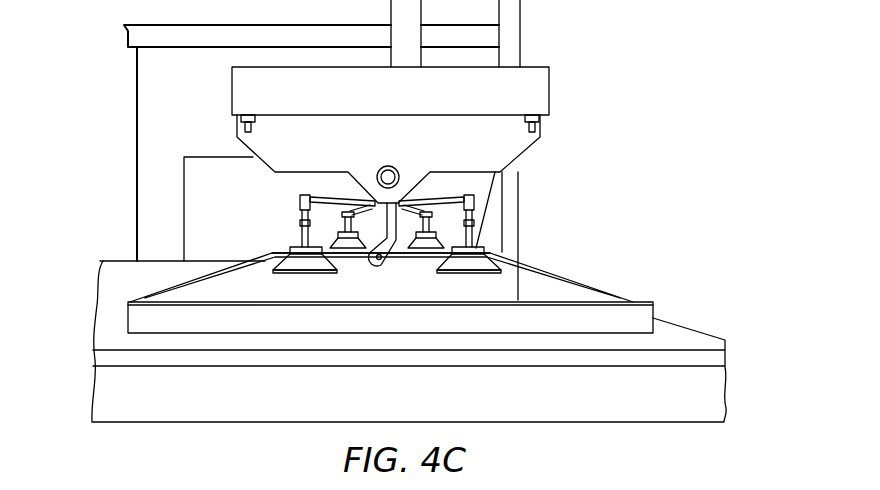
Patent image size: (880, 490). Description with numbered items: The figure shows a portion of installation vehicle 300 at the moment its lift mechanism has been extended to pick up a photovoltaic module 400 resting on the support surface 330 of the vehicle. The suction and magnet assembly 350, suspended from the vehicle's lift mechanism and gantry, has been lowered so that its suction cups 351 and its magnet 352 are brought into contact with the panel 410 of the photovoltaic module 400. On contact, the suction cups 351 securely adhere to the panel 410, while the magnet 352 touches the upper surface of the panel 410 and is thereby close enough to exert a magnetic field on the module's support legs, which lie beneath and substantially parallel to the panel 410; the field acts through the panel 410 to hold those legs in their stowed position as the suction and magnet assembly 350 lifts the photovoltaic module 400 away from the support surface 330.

The installation vehicle 300 is at (655, 140).
The support surface 330 is at (123, 282).
The suction and magnet assembly 350 is at (533, 88).
The suction cups 351 is at (294, 251).
The magnet 352 is at (368, 268).
The photovoltaic module 400 is at (142, 318).
The panel 410 is at (430, 293).